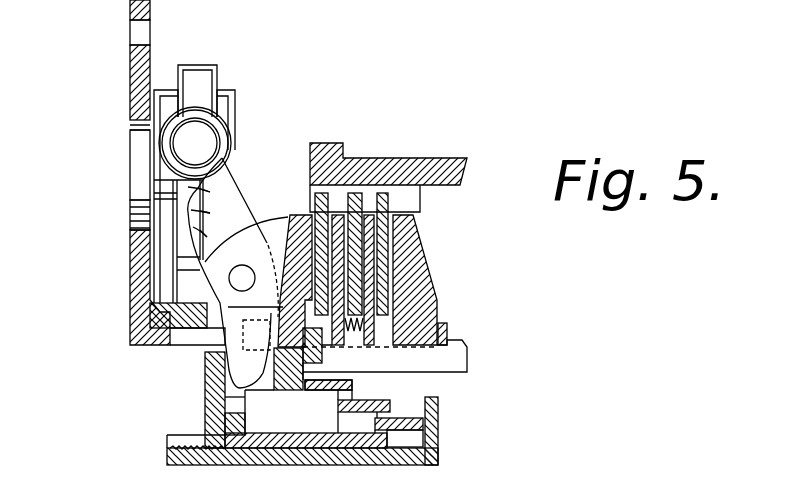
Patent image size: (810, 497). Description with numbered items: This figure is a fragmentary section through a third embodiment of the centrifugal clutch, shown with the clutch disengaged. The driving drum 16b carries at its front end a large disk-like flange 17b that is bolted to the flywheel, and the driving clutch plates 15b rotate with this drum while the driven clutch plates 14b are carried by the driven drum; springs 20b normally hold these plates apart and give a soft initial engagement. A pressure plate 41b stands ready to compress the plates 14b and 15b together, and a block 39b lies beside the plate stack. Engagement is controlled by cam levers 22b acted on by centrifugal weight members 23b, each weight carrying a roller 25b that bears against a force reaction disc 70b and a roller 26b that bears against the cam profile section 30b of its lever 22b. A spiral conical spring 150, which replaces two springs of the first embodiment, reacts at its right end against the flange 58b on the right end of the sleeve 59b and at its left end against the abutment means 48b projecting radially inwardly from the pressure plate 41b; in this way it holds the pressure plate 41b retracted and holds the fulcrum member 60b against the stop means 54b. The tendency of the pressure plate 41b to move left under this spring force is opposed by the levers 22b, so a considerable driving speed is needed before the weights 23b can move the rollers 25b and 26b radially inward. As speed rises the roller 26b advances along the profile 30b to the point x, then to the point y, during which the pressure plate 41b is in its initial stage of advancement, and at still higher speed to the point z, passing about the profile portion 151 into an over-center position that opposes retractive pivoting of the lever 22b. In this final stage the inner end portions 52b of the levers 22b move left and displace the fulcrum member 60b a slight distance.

The disk-like flange 17b is at (130, 75).
The force reaction disc 70b is at (135, 181).
The driving drum 16b is at (212, 300).
The centrifugal weight member 23b is at (215, 67).
The roller 26b is at (237, 108).
The roller 25b is at (228, 120).
The cam profile section 30b is at (240, 158).
The cam lever 22b is at (245, 195).
The profile portion 151 is at (211, 214).
The point X on cam profile x is at (216, 193).
The point Y on cam profile y is at (214, 208).
The point Z on cam profile z is at (209, 238).
The pressure plate 41b is at (302, 220).
The driven clutch plate 14b is at (384, 195).
The driving clutch plate 15b is at (340, 292).
The pressure block 39b is at (417, 248).
The spring 20b is at (360, 328).
The abutment means 48b is at (270, 390).
The spiral conical spring 150 is at (378, 403).
The flange 58b is at (440, 422).
The sleeve 59b is at (333, 465).
The stop means 54b is at (233, 428).
The fulcrum member 60b is at (207, 397).
The inner end portion 52b is at (207, 367).